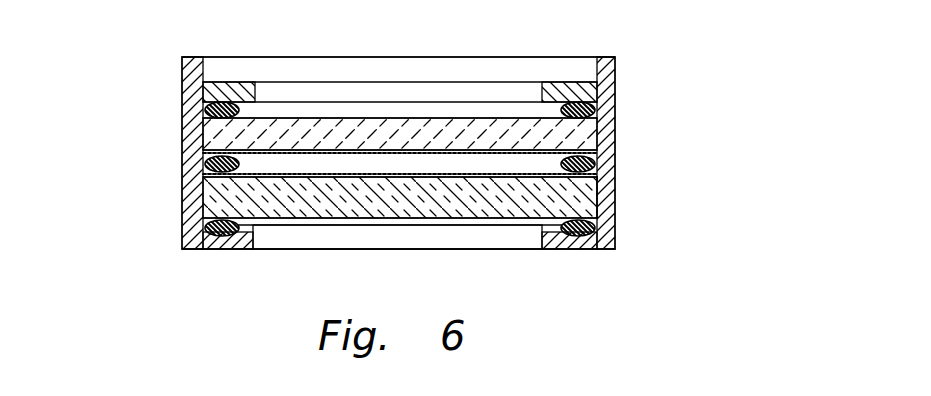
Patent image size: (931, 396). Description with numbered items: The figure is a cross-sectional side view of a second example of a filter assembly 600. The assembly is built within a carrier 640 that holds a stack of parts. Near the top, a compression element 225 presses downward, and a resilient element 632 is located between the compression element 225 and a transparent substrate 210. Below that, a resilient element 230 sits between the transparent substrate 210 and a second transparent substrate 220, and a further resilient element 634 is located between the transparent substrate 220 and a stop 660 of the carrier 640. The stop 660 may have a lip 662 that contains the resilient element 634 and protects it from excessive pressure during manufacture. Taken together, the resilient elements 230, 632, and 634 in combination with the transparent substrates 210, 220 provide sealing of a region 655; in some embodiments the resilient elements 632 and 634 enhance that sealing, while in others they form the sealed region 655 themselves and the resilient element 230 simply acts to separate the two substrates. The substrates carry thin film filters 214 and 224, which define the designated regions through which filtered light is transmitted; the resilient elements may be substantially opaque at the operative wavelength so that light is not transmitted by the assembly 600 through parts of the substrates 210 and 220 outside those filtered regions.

The filter assembly 600 is at (700, 80).
The carrier 640 is at (617, 175).
The compression element 225 is at (556, 83).
The thin film filter 214 is at (386, 160).
The transparent substrate 210 is at (205, 137).
The resilient element 230 is at (205, 163).
The transparent substrate 220 is at (205, 199).
The sealed region 655 is at (603, 193).
The thin film filter 224 is at (406, 173).
The lip 662 is at (256, 234).
The stop 660 is at (225, 249).
The resilient element 632 is at (205, 110).
The resilient element 634 is at (205, 232).